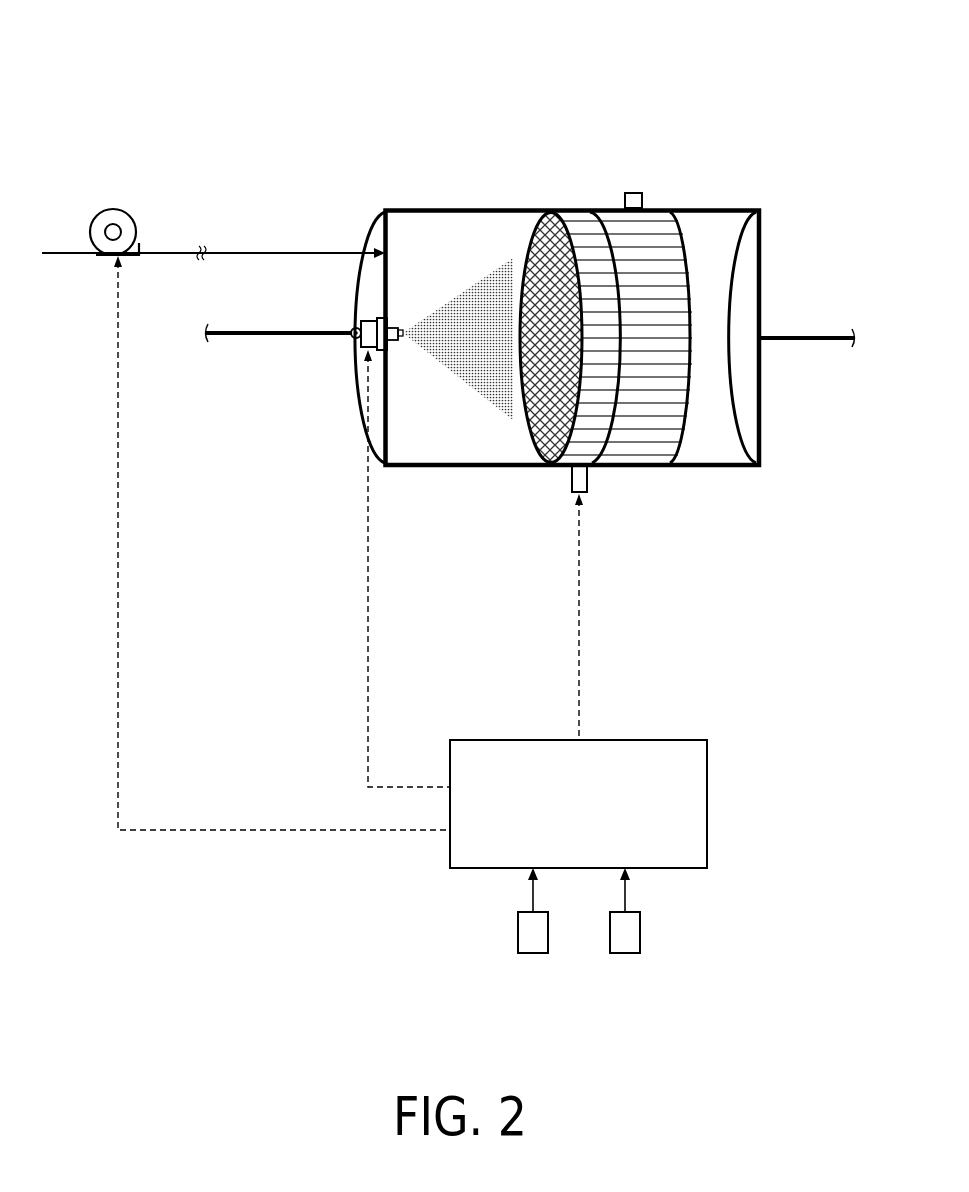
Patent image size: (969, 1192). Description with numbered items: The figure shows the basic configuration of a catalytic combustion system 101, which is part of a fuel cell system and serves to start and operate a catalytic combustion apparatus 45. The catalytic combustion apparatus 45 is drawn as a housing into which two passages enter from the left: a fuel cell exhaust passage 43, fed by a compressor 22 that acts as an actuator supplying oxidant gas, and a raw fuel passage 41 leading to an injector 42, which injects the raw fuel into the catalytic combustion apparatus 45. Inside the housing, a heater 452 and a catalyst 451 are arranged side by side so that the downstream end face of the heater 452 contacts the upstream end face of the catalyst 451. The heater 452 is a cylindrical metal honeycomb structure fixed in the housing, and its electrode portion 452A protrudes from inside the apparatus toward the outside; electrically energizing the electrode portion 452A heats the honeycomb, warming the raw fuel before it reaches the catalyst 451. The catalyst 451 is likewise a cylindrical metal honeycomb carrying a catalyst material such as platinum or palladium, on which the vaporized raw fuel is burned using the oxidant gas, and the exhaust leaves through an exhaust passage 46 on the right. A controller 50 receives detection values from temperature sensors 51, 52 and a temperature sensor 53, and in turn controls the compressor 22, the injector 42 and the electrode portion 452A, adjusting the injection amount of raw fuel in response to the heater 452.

The catalytic combustion system 101 is at (127, 86).
The compressor 22 is at (112, 210).
The fuel cell exhaust passage 43 is at (280, 253).
The catalytic combustion apparatus 45 is at (447, 186).
The injector 42 is at (355, 322).
The raw fuel passage 41 is at (263, 335).
The catalyst 451 is at (672, 225).
The heater 452 is at (580, 225).
The temperature sensor 53 is at (634, 192).
The electrode portion 452A is at (588, 480).
The exhaust passage 46 is at (810, 338).
The controller 50 is at (657, 740).
The temperature sensor 51 is at (535, 955).
The temperature sensor 52 is at (627, 955).